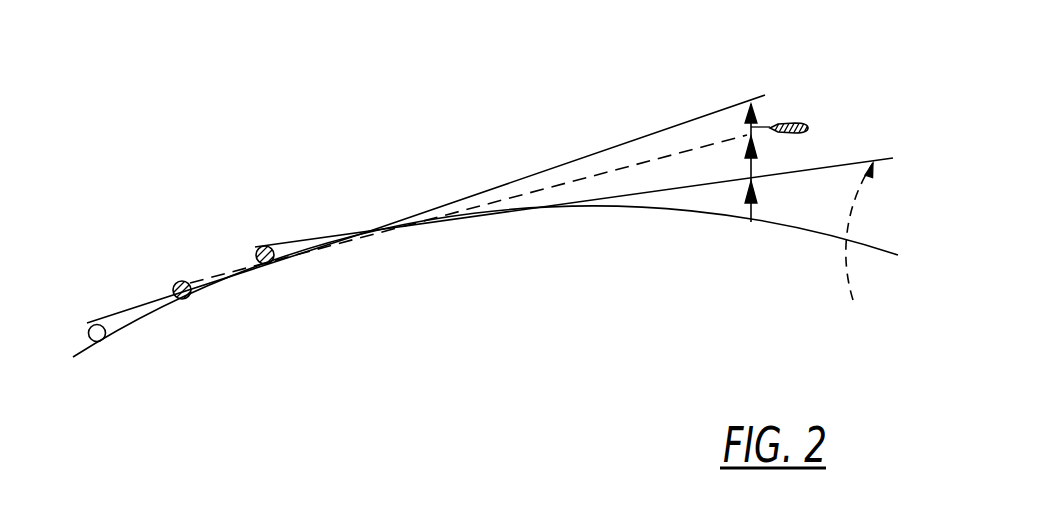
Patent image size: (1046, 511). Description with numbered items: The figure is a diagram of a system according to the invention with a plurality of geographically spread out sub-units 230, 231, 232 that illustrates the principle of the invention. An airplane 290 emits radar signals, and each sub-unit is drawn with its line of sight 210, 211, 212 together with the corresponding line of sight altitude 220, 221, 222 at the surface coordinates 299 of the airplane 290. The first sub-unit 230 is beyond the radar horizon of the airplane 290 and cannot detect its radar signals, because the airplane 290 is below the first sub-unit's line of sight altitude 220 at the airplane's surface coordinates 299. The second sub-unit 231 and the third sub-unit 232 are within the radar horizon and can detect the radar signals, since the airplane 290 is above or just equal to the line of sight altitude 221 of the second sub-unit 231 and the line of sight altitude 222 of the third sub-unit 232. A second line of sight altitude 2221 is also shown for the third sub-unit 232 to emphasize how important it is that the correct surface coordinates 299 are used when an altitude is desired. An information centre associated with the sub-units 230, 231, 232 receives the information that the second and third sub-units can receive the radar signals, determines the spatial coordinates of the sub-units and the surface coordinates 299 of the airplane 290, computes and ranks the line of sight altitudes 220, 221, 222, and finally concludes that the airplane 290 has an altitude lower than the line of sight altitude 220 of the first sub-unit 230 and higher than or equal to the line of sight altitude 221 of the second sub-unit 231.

The line of sight 210 is at (537, 172).
The line of sight 211 is at (596, 172).
The line of sight 212 is at (682, 187).
The line of sight altitude 220 is at (756, 115).
The line of sight altitude 221 is at (754, 165).
The line of sight altitude 222 is at (754, 207).
The second line of sight altitude 2221 is at (858, 212).
The first sub-unit 230 is at (103, 341).
The second sub-unit 231 is at (185, 301).
The third sub-unit 232 is at (272, 266).
The airplane 290 is at (797, 112).
The surface coordinates 299 is at (748, 222).